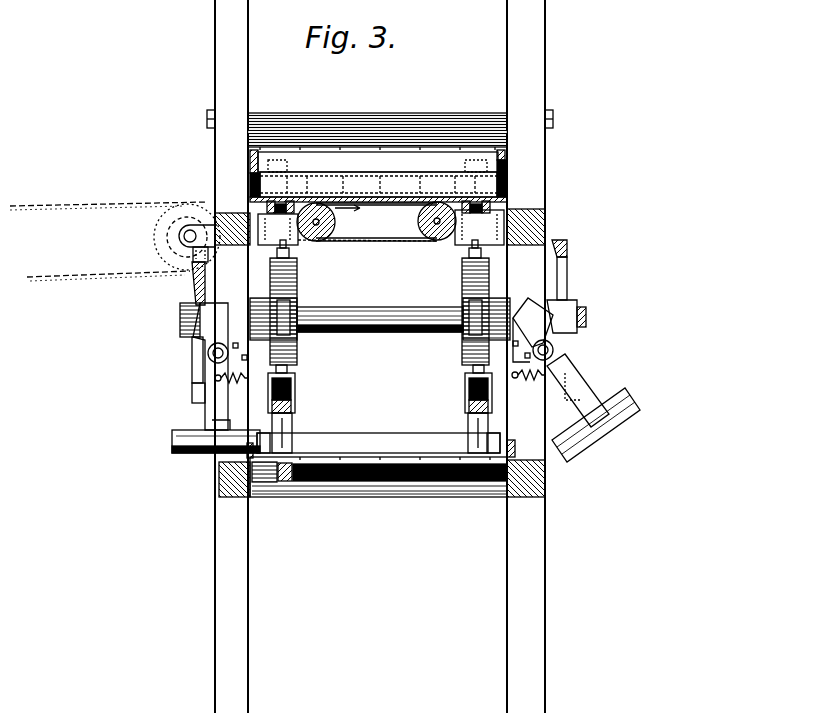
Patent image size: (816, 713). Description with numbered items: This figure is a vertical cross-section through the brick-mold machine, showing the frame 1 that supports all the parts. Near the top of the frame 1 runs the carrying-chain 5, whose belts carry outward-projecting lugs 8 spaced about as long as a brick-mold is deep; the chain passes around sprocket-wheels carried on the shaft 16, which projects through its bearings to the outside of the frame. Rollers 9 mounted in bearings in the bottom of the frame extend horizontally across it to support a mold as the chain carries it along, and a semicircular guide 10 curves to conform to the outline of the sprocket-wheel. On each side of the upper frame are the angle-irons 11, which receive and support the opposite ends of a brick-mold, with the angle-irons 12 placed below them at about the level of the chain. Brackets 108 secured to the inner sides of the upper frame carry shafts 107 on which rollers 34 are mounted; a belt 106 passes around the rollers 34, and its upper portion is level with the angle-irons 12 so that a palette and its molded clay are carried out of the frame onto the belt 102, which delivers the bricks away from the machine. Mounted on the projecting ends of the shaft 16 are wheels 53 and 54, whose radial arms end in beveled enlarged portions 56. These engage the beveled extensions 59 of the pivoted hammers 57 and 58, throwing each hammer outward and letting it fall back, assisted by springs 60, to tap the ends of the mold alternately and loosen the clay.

The frame 1 is at (220, 479).
The carrying-chain 5 is at (296, 392).
The lugs 8 is at (290, 312).
The rollers 9 is at (392, 481).
The semicircular guide 10 is at (405, 132).
The angle-irons 11 is at (250, 162).
The angle-irons 12 is at (250, 198).
The shaft 16 is at (352, 312).
The rollers 34 is at (316, 241).
The wheel 53 is at (180, 320).
The wheel 54 is at (568, 305).
The enlarged portion 56 is at (195, 278).
The hammer 57 is at (210, 412).
The hammer 58 is at (590, 396).
The extension 59 is at (222, 315).
The springs 60 is at (538, 378).
The belt 102 is at (78, 282).
The belt 106 is at (404, 240).
The shafts 107 is at (319, 222).
The brackets 108 is at (465, 238).